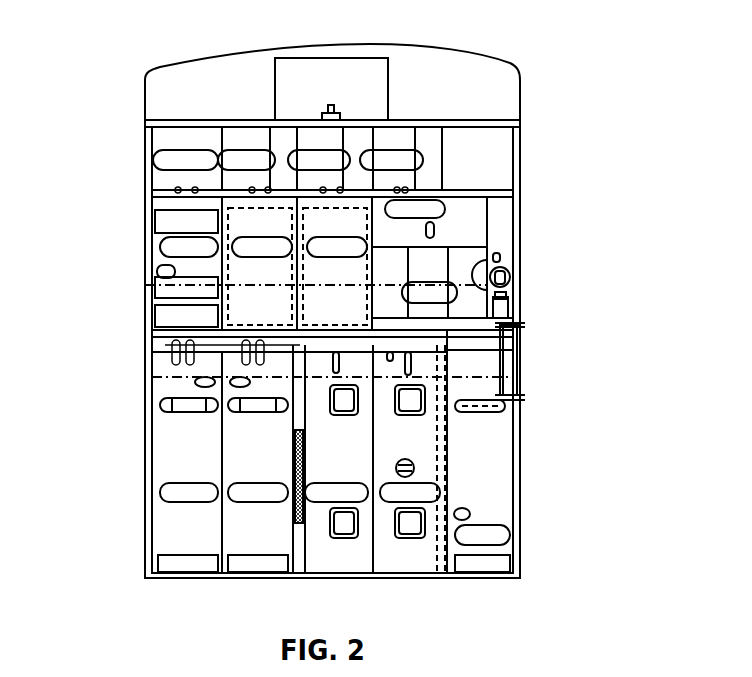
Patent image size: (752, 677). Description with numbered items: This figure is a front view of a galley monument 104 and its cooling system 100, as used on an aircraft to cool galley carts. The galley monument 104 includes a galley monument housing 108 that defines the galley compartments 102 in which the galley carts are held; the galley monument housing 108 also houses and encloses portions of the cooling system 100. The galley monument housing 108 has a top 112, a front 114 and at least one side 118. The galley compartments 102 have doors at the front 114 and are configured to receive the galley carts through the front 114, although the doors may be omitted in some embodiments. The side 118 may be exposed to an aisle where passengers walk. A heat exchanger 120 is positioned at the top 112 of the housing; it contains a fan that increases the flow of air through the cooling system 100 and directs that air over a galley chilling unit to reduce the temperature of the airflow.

The cooling system 100 is at (368, 47).
The galley compartments 102 is at (193, 456).
The galley monument 104 is at (522, 203).
The galley monument housing 108 is at (512, 260).
The top 112 is at (478, 60).
The front 114 is at (350, 457).
The side 118 is at (520, 365).
The heat exchanger 120 is at (323, 92).